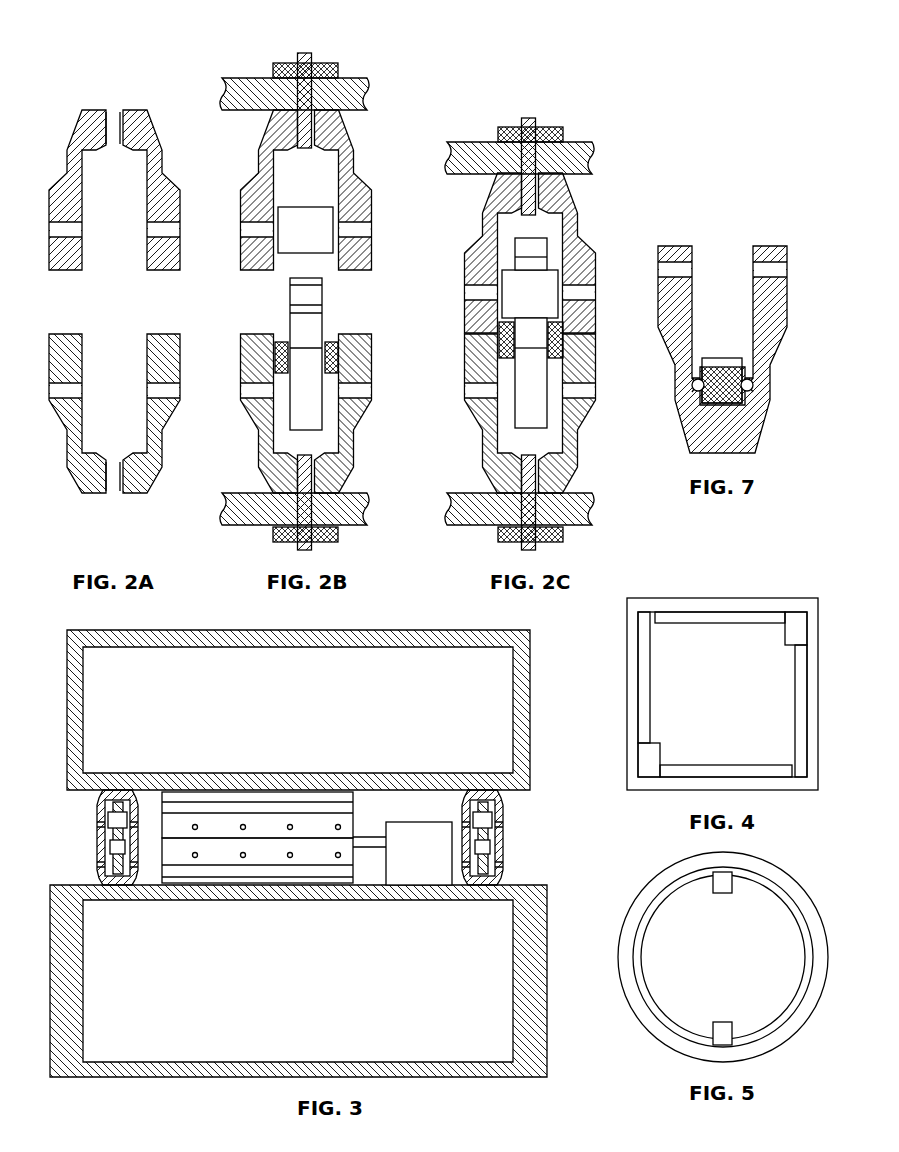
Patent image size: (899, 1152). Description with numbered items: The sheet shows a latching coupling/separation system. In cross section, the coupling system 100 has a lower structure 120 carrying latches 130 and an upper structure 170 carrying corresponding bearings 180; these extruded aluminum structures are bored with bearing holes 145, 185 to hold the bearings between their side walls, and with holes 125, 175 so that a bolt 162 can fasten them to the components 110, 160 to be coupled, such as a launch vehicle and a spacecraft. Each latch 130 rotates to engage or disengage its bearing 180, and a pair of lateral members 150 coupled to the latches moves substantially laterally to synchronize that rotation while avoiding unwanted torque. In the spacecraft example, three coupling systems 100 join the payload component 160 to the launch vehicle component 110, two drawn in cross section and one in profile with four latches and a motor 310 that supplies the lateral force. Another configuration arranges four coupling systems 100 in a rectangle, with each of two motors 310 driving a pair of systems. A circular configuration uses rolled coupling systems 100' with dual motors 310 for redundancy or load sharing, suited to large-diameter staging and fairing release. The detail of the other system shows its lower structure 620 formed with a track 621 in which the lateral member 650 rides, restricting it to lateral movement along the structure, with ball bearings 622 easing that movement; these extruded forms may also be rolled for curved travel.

In FIG. 3, the coupling system 100 is at (332, 866).
In FIG. 4, the coupling system 100 is at (722, 694).
In FIG. 5, the coupling system 100' is at (723, 957).
In FIG. 2B, the component 110 is at (294, 509).
In FIG. 2C, the component 110 is at (467, 527).
In FIG. 3, the component 110 is at (172, 1078).
In FIG. 4, the component 110 is at (625, 693).
In FIG. 5, the component 110 is at (618, 960).
In FIG. 2A, the lower structure 120 is at (82, 493).
In FIG. 2B, the lower structure 120 is at (306, 413).
In FIG. 2C, the lower structure 120 is at (482, 432).
In FIG. 3, the lower structure 120 is at (338, 862).
In FIG. 2A, the hole 125 is at (113, 485).
In FIG. 2B, the latch 130 is at (300, 318).
In FIG. 2C, the latch 130 is at (528, 253).
In FIG. 2A, the bearing hole 145 is at (147, 390).
In FIG. 2B, the bearing hole 145 is at (306, 390).
In FIG. 2C, the bearing hole 145 is at (530, 390).
In FIG. 2B, the lateral member 150 is at (332, 342).
In FIG. 2C, the lateral member 150 is at (531, 340).
In FIG. 2B, the component 160 is at (253, 78).
In FIG. 2C, the component 160 is at (467, 142).
In FIG. 3, the component 160 is at (210, 630).
In FIG. 2B, the bolt 162 is at (307, 78).
In FIG. 2C, the bolt 162 is at (530, 334).
In FIG. 2A, the upper structure 170 is at (83, 110).
In FIG. 2B, the upper structure 170 is at (306, 190).
In FIG. 2C, the upper structure 170 is at (482, 205).
In FIG. 3, the upper structure 170 is at (340, 812).
In FIG. 2A, the hole 175 is at (113, 118).
In FIG. 2B, the bearing 180 is at (307, 238).
In FIG. 2C, the bearing 180 is at (530, 285).
In FIG. 2A, the bearing hole 185 is at (147, 230).
In FIG. 2B, the bearing hole 185 is at (306, 229).
In FIG. 2C, the bearing hole 185 is at (530, 292).
In FIG. 3, the motor 310 is at (417, 822).
In FIG. 4, the motor 310 is at (787, 645).
In FIG. 5, the motor 310 is at (720, 895).
In FIG. 7, the lower structure 620 is at (688, 415).
In FIG. 7, the track 621 is at (691, 385).
In FIG. 7, the ball bearing 622 is at (692, 390).
In FIG. 7, the lateral member 650 is at (703, 375).